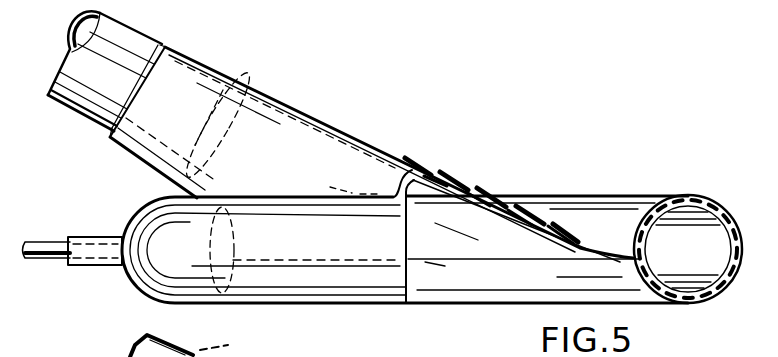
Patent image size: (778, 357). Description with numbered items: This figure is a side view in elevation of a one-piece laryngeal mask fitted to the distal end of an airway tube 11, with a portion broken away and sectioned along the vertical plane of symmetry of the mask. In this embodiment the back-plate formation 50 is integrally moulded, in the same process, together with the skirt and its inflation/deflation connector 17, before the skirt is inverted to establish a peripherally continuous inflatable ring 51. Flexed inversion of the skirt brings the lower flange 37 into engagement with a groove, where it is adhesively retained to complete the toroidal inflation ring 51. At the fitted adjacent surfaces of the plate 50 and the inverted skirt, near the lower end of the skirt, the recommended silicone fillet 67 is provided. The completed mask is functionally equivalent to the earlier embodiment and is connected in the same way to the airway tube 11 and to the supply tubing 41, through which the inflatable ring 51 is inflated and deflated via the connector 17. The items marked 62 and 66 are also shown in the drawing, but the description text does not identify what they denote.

The airway tube 11 is at (138, 57).
The back-plate formation 50 is at (283, 94).
The inflatable ring 51 is at (563, 196).
The lower flange 37 is at (627, 197).
The silicone fillet 67 is at (641, 197).
The supply tubing 41 is at (40, 243).
The inflation/deflation connector 17 is at (101, 238).
The clip 62 is at (141, 346).
The line 66 is at (232, 348).